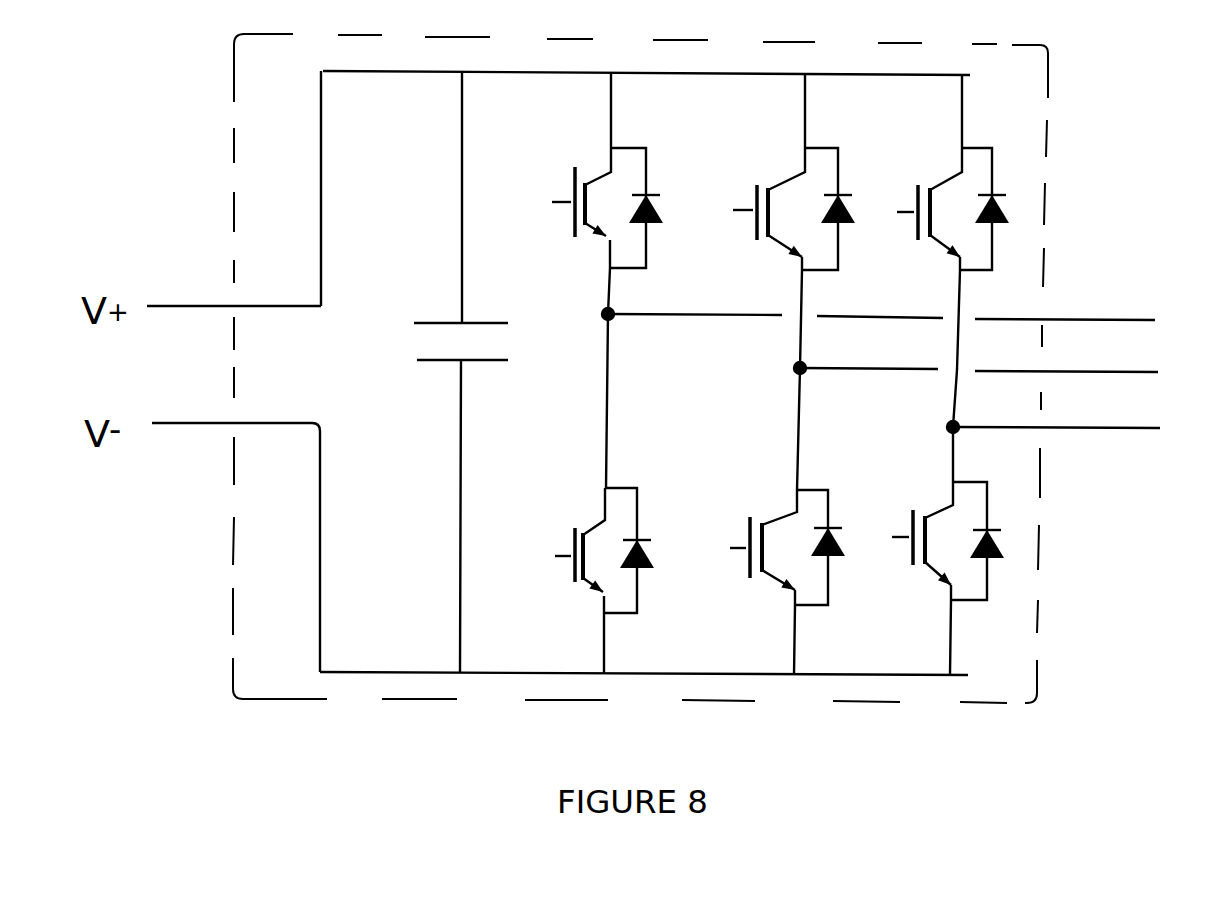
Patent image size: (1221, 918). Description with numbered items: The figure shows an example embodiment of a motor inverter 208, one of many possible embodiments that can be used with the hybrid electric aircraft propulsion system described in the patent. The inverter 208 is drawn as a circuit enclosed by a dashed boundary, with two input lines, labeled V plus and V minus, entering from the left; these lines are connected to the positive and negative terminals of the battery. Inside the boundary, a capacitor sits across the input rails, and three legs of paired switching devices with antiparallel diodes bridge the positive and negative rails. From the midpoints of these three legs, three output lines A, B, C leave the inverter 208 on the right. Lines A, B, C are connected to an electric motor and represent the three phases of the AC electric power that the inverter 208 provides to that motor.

The motor inverter 208 is at (1048, 152).
The line A is at (1070, 433).
The line B is at (993, 373).
The line C is at (898, 320).